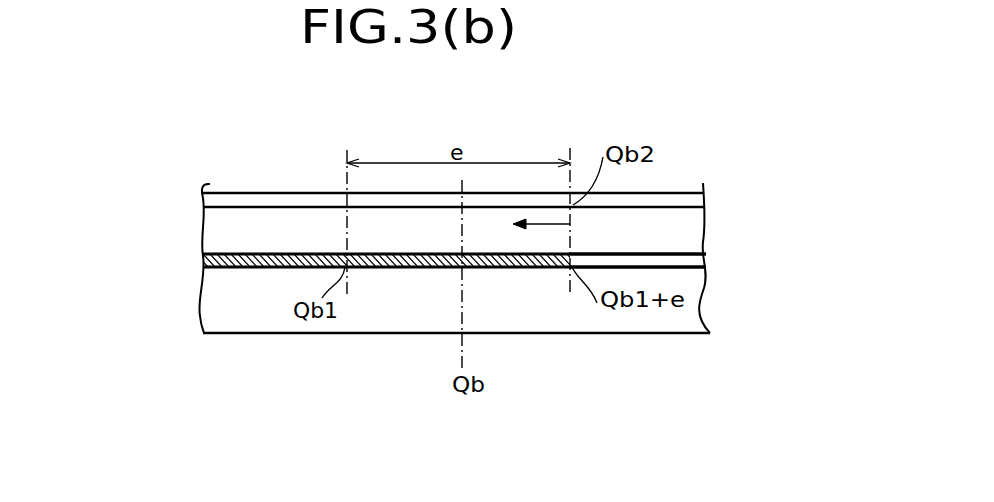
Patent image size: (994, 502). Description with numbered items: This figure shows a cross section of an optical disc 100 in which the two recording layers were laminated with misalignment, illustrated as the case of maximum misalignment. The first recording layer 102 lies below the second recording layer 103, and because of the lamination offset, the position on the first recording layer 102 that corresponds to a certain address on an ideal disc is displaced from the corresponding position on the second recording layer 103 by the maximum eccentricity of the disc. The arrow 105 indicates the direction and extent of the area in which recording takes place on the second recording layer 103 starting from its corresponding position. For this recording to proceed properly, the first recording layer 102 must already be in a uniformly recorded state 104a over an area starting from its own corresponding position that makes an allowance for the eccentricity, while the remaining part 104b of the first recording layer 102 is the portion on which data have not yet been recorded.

The optical disc 100 is at (245, 335).
The first recording layer 102 is at (657, 248).
The second recording layer 103 is at (277, 191).
The recorded part of the first recording layer 104a is at (233, 264).
The unrecorded part of the first recording layer 104b is at (690, 262).
The arrow 105 is at (535, 225).